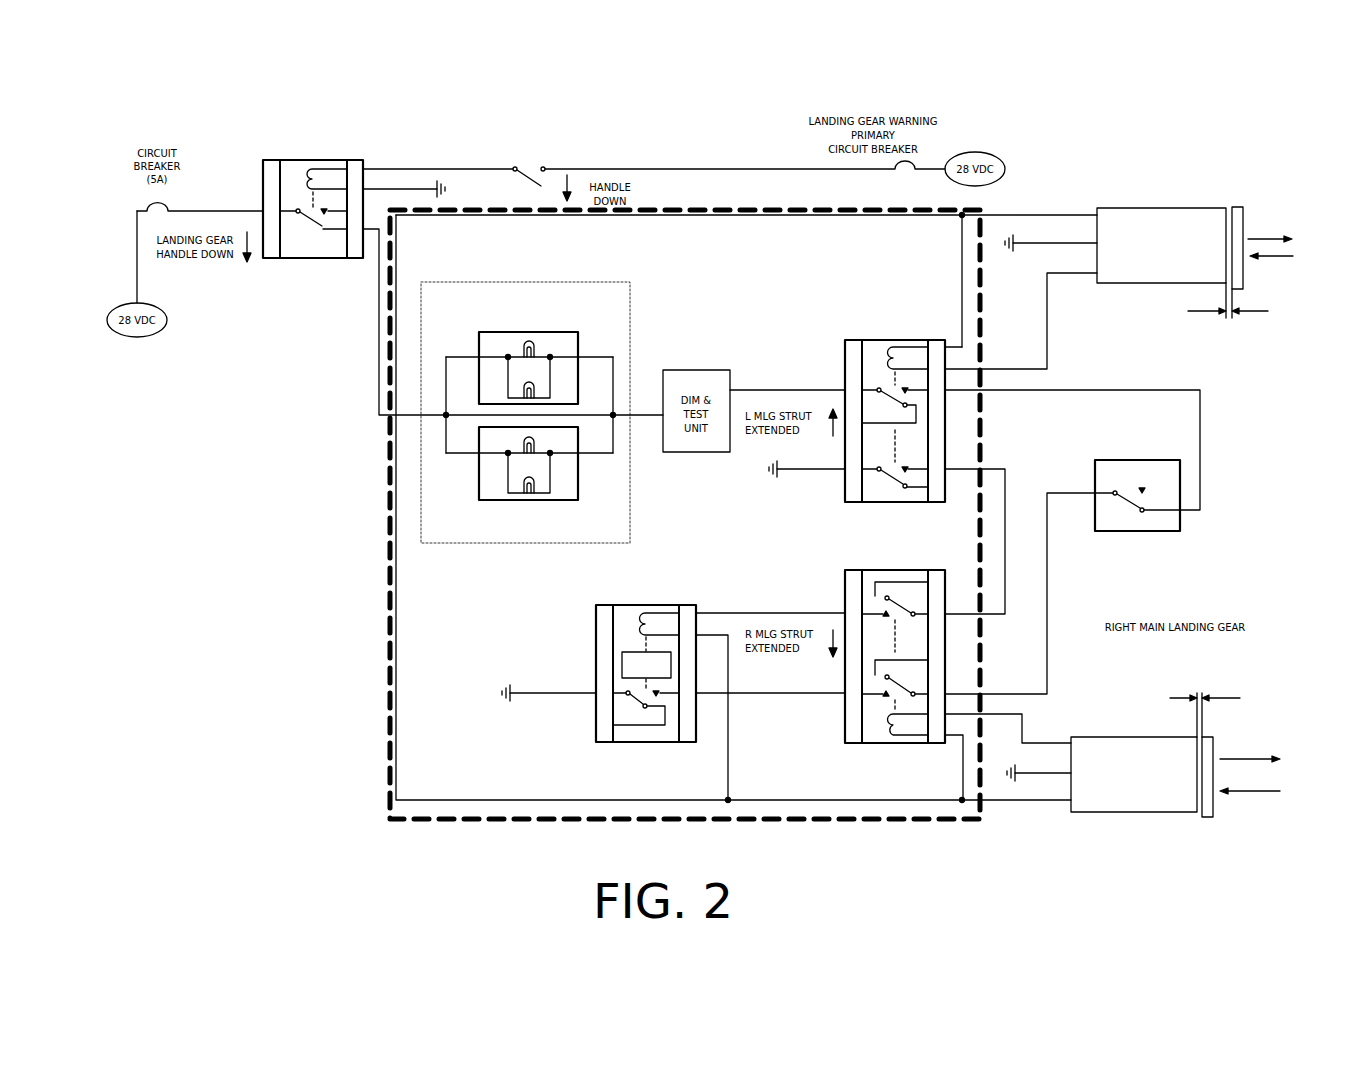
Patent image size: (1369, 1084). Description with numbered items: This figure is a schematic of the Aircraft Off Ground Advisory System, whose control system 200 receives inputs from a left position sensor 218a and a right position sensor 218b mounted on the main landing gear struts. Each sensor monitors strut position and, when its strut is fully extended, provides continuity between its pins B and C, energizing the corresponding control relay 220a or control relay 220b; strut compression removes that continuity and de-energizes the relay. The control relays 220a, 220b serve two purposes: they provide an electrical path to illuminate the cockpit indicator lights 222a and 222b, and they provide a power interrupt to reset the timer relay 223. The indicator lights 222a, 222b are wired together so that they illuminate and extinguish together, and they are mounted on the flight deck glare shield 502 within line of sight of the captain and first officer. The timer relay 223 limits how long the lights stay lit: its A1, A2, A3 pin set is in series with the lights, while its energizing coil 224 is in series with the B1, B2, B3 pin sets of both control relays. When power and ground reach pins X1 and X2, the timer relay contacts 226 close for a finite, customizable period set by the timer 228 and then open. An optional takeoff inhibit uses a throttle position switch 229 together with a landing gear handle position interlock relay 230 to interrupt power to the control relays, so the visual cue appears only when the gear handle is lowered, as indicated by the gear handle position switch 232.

The control system 200 is at (390, 560).
The position sensor 218a is at (1220, 208).
The position sensor 218b is at (1197, 812).
The control relay 220a is at (845, 372).
The control relay 220b is at (845, 575).
The indicator light 222a is at (572, 348).
The indicator light 222b is at (578, 478).
The timer relay 223 is at (614, 674).
The timer relay energizing coil 224 is at (638, 628).
The timer relay contacts 226 is at (643, 705).
The timer 228 is at (625, 652).
The throttle position switch 229 is at (1180, 515).
The landing gear handle position interlock relay 230 is at (363, 160).
The gear handle position switch 232 is at (520, 177).
The glare shield 502 is at (630, 300).